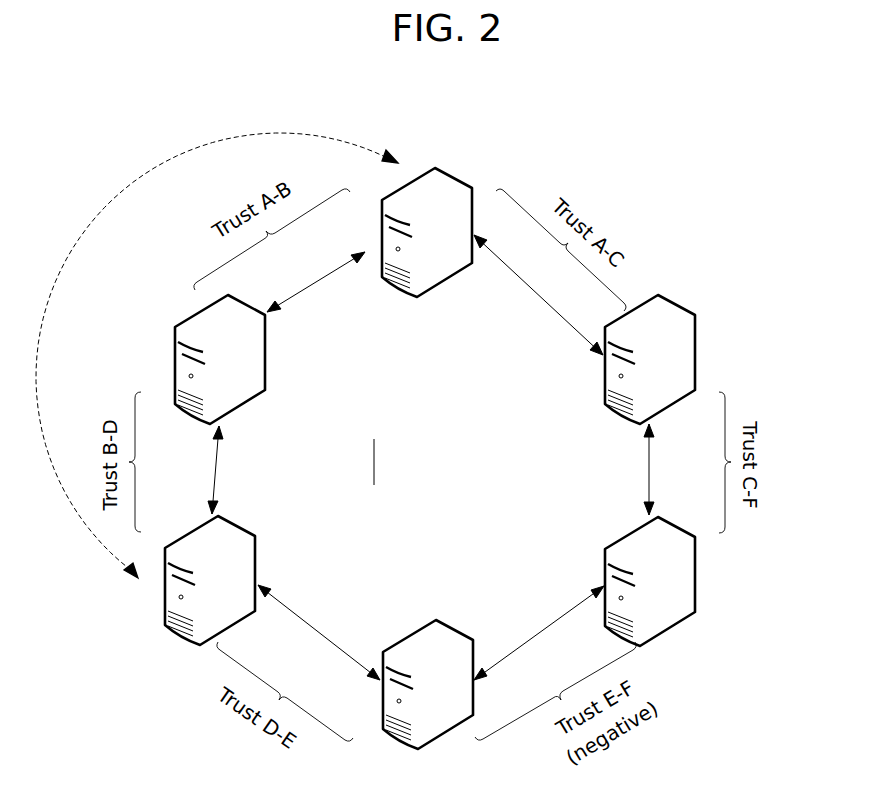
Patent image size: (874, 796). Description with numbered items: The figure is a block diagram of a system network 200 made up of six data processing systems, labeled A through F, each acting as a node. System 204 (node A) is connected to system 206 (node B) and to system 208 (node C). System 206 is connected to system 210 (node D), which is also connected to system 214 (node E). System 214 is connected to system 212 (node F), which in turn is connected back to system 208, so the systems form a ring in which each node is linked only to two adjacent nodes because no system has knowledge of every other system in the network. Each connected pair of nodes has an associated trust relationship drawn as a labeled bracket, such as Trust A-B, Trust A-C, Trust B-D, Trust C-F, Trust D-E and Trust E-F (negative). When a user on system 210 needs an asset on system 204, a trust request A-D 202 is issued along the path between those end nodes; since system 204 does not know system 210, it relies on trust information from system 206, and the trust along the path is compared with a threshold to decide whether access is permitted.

The system network 200 is at (427, 458).
The trust request A-D 202 is at (217, 336).
The system 204 is at (452, 176).
The system 206 is at (265, 352).
The system 208 is at (695, 316).
The system 210 is at (255, 537).
The system 212 is at (695, 557).
The system 214 is at (420, 628).